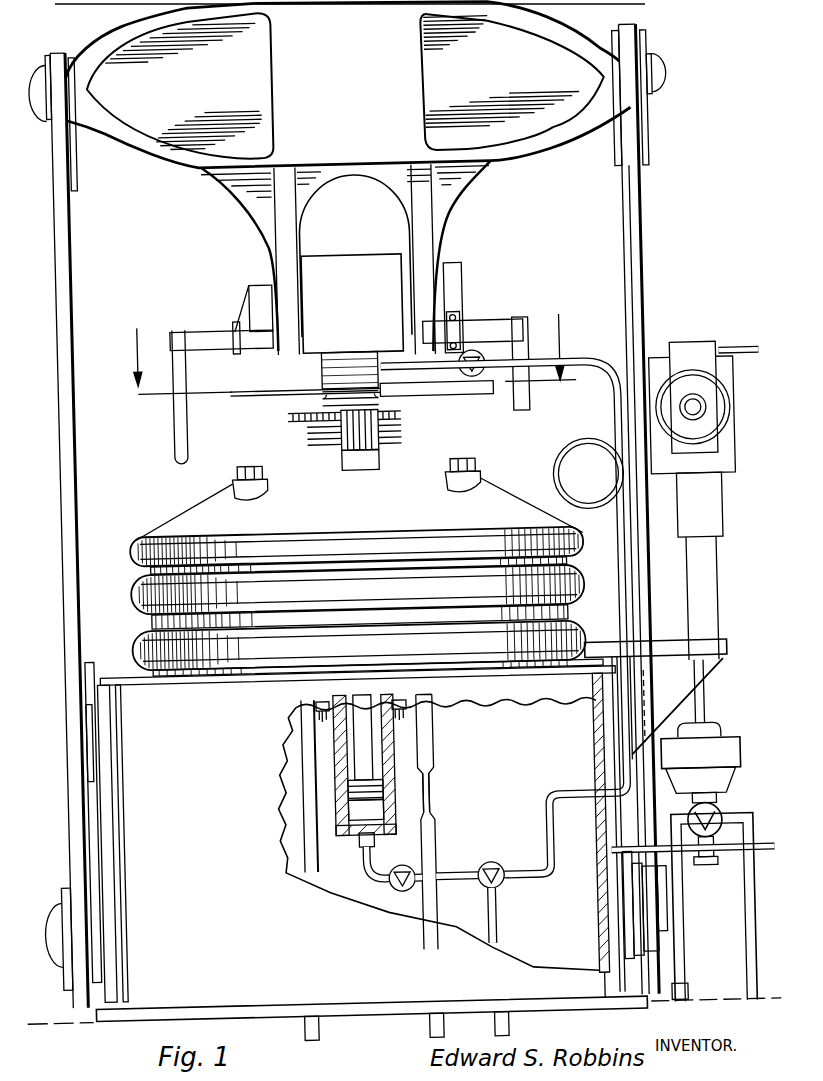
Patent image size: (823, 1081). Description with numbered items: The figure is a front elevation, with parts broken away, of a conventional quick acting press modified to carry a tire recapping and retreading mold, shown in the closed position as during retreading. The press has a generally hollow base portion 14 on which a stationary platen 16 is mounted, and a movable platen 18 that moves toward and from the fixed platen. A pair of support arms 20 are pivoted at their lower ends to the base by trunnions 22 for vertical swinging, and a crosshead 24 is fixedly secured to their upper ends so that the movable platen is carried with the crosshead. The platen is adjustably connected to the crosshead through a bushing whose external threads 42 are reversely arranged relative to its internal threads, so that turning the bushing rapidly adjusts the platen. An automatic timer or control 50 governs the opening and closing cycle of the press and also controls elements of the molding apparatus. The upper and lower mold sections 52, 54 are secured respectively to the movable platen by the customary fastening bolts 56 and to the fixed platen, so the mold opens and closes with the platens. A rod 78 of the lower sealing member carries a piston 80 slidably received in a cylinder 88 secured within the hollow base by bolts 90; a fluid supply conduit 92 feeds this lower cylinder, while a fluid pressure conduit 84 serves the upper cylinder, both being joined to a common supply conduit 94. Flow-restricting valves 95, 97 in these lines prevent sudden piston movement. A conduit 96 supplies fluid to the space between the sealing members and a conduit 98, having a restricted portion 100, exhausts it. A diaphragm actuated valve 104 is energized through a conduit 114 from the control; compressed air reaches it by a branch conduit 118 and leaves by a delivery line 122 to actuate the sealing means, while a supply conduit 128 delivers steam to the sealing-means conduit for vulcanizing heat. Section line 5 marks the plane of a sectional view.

The section line 5- 5 is at (351, 343).
The base portion 14 is at (400, 846).
The stationary platen 16 is at (128, 674).
The movable platen 18 is at (400, 545).
The support arms 20 is at (643, 305).
The trunnions 22 is at (53, 950).
The crosshead 24 is at (350, 181).
The external threads of adjusting bushing 42 is at (314, 438).
The automatic timer or control 50 is at (693, 352).
The upper mold section 52 is at (358, 597).
The lower mold section 54 is at (367, 648).
The fastening bolts 56 is at (474, 468).
The rod 78 is at (360, 735).
The piston 80 is at (344, 796).
The fluid pressure conduit 84 is at (580, 362).
The cylinder 88 is at (387, 760).
The bolts 90 is at (311, 698).
The fluid supply conduit 92 is at (359, 869).
The supply conduit 94 is at (491, 932).
The flow-restricting valve 95 is at (389, 890).
The conduit 96 is at (478, 352).
The flow-restricting valve 97 is at (488, 866).
The conduit 98 is at (418, 912).
The restricted portion 100 is at (424, 794).
The diaphragm actuated valve 104 is at (713, 758).
The conduit 114 is at (730, 356).
The branch conduit 118 is at (736, 913).
The delivery line 122 is at (672, 991).
The supply conduit 128 is at (755, 850).